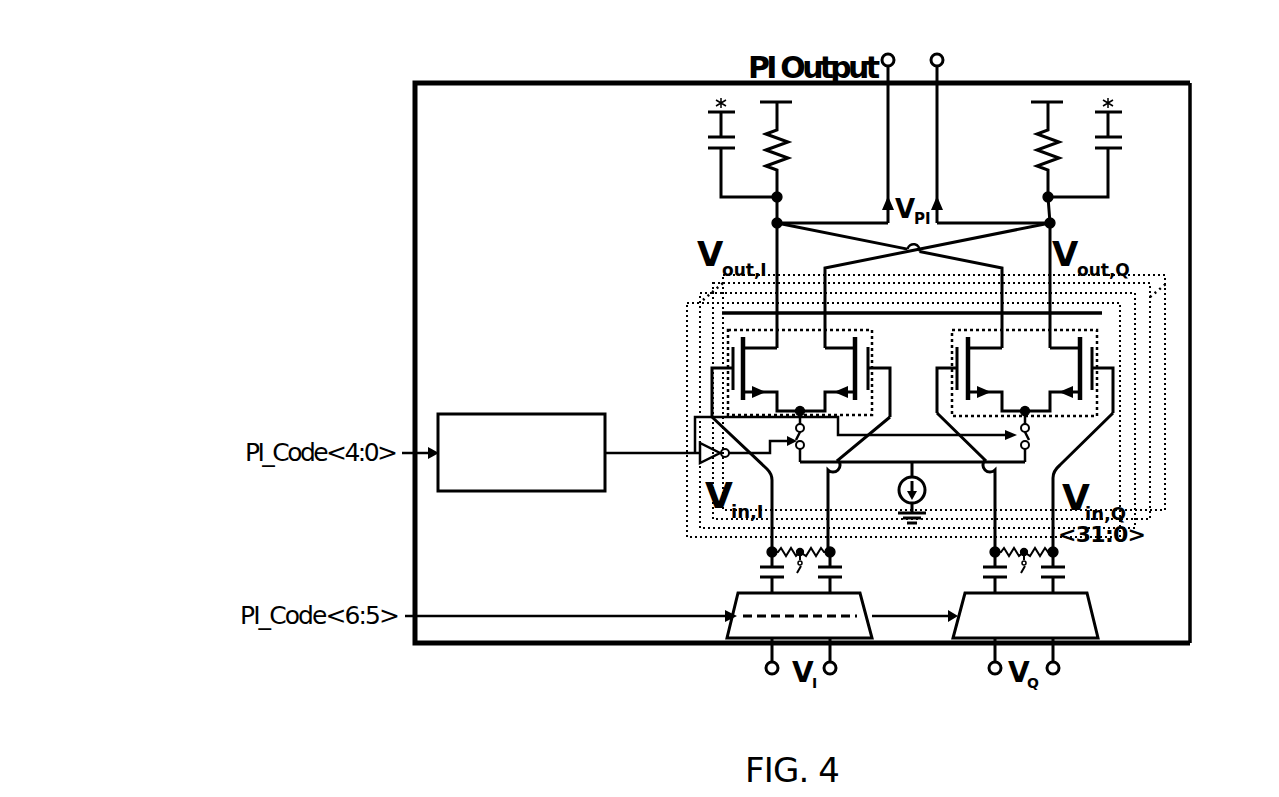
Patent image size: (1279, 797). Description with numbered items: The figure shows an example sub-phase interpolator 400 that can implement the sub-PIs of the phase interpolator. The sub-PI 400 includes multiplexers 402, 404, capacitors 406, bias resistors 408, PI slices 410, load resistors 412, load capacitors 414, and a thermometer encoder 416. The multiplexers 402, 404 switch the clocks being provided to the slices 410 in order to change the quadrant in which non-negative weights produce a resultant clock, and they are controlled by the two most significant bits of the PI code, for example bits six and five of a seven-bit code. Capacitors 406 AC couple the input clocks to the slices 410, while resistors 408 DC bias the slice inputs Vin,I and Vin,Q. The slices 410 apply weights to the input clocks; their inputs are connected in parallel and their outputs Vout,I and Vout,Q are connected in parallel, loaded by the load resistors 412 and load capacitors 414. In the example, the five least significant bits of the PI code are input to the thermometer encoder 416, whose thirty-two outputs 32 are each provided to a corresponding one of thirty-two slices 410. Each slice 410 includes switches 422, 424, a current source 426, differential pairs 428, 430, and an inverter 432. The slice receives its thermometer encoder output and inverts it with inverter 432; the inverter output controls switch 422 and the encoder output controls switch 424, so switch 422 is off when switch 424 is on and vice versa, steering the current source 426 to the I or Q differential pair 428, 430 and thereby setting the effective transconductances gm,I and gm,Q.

The sub-phase interpolator 400 is at (1190, 83).
The multiplexer 402 is at (737, 615).
The multiplexer 404 is at (1095, 623).
The capacitors 406 is at (745, 571).
The bias resistors 408 is at (745, 552).
The PI slices 410 is at (1112, 548).
The load resistors 412 is at (795, 147).
The load capacitors 414 is at (713, 152).
The thermometer encoder 416 is at (515, 492).
The switch 422 is at (797, 443).
The switch 424 is at (1031, 440).
The current source 426 is at (923, 485).
The differential pair 428 is at (862, 331).
The differential pair 430 is at (952, 335).
The inverter 432 is at (700, 460).
The thermometer encoder outputs 32 is at (630, 466).